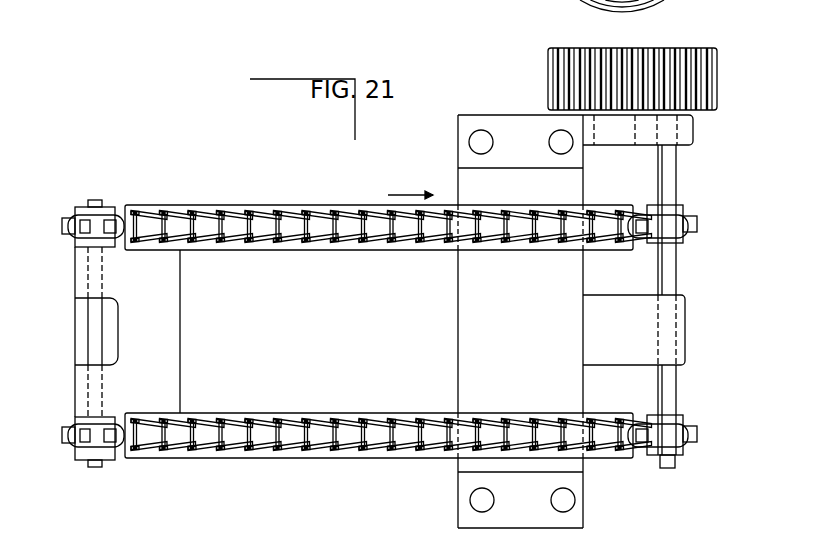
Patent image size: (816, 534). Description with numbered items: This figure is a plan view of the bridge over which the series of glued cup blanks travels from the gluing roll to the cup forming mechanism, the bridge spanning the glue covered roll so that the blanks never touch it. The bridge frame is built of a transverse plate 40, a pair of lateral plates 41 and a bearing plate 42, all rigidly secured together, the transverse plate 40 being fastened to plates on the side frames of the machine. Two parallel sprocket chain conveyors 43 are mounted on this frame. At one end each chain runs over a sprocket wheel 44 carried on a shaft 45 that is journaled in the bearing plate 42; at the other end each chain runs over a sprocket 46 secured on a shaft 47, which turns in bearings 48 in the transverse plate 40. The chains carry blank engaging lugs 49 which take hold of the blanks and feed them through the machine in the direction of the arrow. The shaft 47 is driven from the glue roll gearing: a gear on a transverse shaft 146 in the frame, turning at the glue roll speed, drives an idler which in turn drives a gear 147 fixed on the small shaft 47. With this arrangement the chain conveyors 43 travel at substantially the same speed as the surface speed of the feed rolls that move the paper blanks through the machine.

The transverse plate 40 is at (520, 321).
The lateral plates 41 is at (327, 243).
The bearing plate 42 is at (172, 346).
The sprocket chain conveyors 43 is at (391, 330).
The sprocket wheel 44 is at (66, 222).
The shaft 45 is at (93, 335).
The sprocket 46 is at (684, 212).
The shaft 47 is at (677, 172).
The bearings 48 is at (694, 133).
The blank engaging lugs 49 is at (238, 215).
The shaft 146 is at (555, 63).
The gear 147 is at (693, 55).